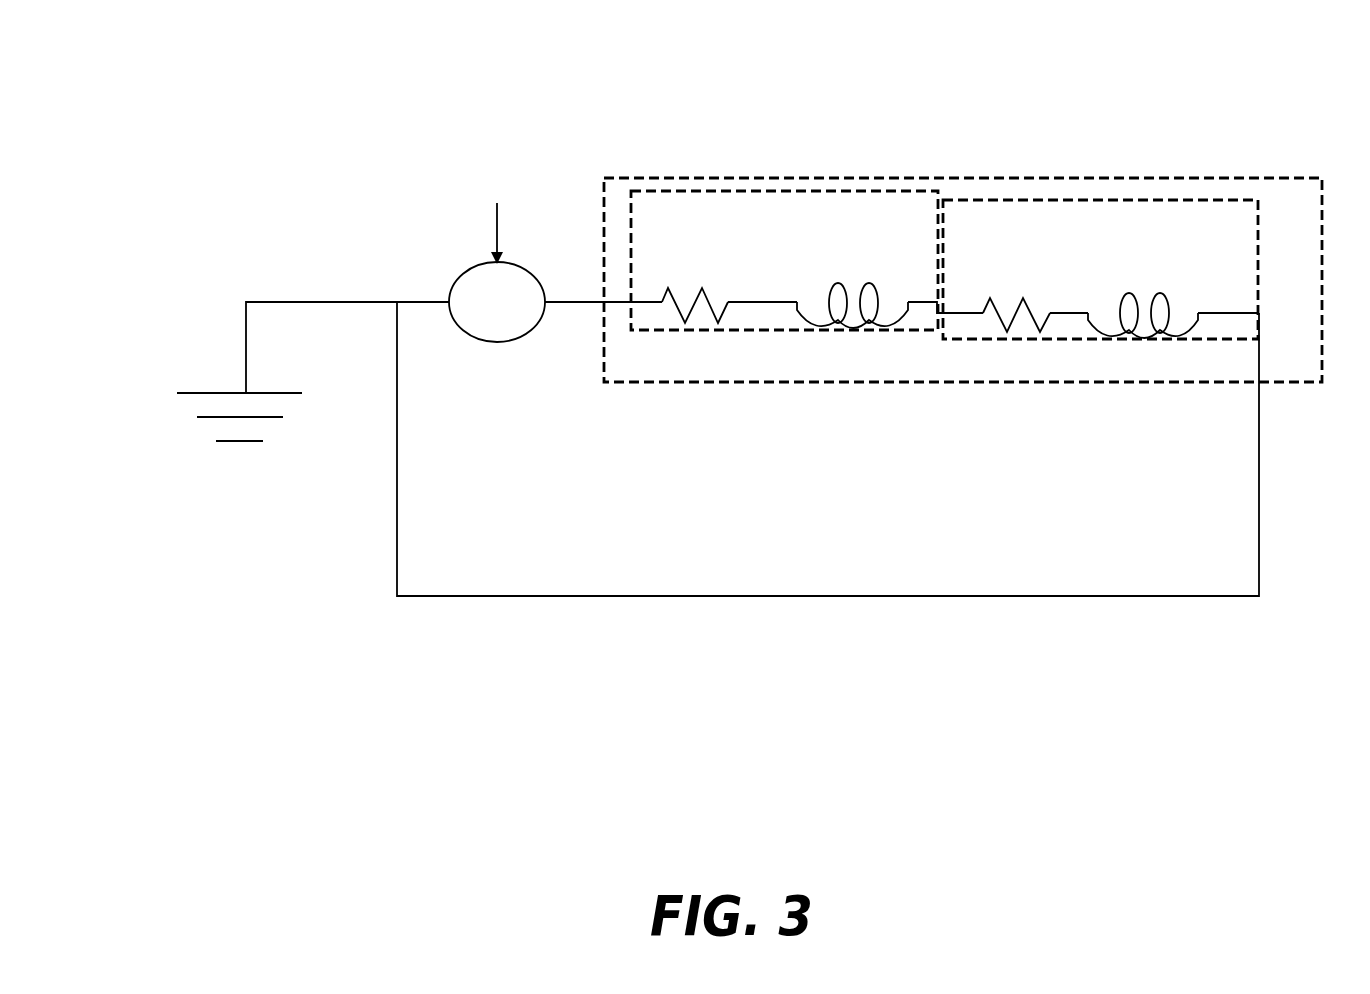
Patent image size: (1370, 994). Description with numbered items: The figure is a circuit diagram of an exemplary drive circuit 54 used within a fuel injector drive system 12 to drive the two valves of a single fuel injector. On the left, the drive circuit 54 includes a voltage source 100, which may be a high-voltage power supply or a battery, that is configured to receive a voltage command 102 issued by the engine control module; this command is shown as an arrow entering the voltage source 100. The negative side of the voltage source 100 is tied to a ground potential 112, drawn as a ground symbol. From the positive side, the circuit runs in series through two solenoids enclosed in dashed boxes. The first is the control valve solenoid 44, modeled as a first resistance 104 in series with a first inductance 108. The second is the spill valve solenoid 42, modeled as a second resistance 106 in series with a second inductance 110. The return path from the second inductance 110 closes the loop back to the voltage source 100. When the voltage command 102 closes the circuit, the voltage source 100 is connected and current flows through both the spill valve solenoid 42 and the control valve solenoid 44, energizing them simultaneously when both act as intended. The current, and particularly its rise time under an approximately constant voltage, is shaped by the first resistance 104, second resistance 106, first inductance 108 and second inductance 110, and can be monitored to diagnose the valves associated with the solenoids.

The fuel injector drive system 12 is at (207, 208).
The drive circuit 54 is at (459, 97).
The ground potential 112 is at (192, 392).
The voltage source 100 is at (465, 263).
The voltage command 102 is at (497, 228).
The control valve solenoid 44 is at (745, 333).
The first resistance 104 is at (670, 292).
The first inductance 108 is at (837, 284).
The spill valve solenoid 42 is at (1090, 340).
The second resistance 106 is at (993, 300).
The second inductance 110 is at (1157, 297).